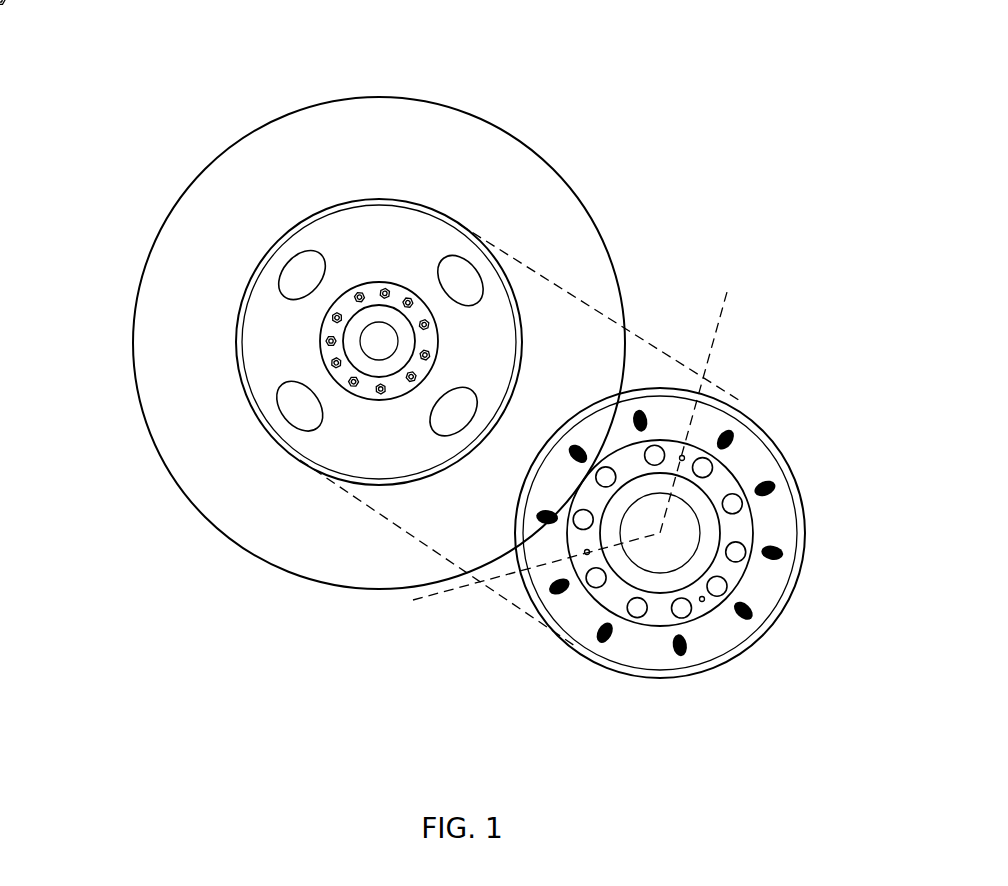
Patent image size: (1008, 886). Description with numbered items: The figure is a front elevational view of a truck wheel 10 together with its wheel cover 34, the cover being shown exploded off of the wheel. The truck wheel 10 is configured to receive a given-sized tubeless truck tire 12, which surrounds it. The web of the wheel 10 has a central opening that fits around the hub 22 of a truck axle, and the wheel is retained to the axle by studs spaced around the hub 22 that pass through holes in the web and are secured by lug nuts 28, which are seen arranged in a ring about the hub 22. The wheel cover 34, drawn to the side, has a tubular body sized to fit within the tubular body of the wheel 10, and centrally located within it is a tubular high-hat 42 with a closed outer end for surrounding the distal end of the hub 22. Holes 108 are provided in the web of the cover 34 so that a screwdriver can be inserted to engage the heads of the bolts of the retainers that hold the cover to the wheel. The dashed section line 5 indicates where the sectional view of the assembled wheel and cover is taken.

The truck wheel 10 is at (470, 220).
The tubeless truck tire 12 is at (590, 210).
The hub 22 is at (348, 365).
The lug nuts 28 is at (385, 288).
The section line 5- 5 is at (434, 594).
The wheel cover 34 is at (799, 490).
The tubular high-hat 42 is at (700, 545).
The hole 108 is at (684, 456).